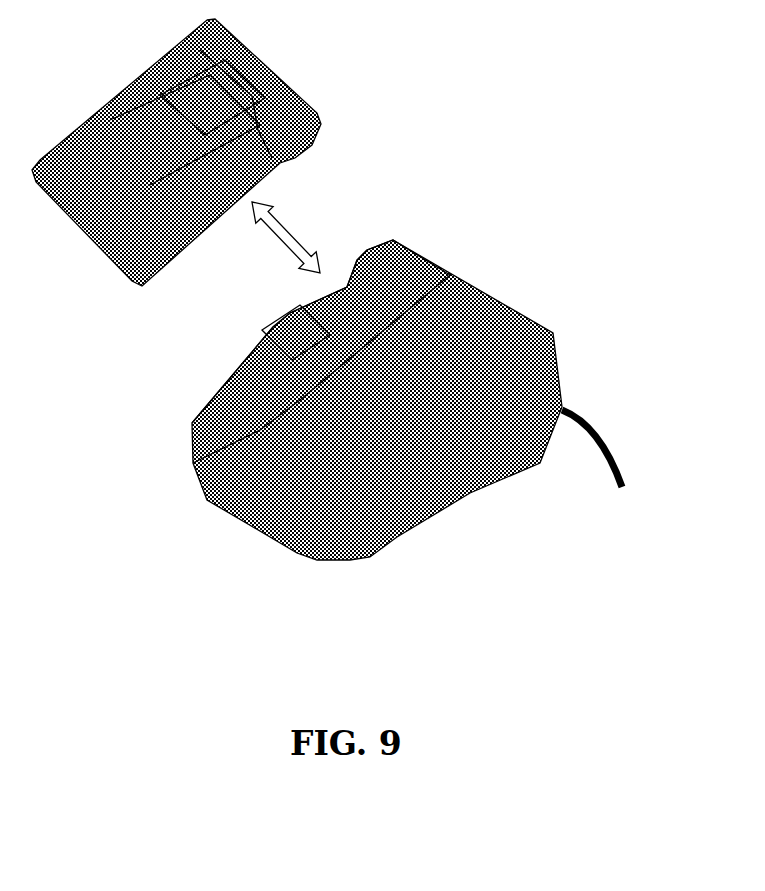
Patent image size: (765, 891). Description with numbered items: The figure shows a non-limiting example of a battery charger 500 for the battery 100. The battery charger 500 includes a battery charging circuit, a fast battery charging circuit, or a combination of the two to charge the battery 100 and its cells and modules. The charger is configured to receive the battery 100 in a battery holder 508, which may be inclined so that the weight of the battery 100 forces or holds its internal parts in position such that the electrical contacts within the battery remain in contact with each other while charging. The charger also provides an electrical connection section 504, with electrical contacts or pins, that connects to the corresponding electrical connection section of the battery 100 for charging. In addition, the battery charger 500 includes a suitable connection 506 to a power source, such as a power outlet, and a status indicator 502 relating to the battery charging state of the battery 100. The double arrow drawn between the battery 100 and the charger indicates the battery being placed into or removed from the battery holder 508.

The battery 100 is at (126, 108).
The battery charger 500 is at (399, 411).
The status indicator 502 is at (403, 537).
The electrical connection section 504 is at (210, 498).
The connection to a power source 506 is at (600, 450).
The battery holder 508 is at (272, 327).